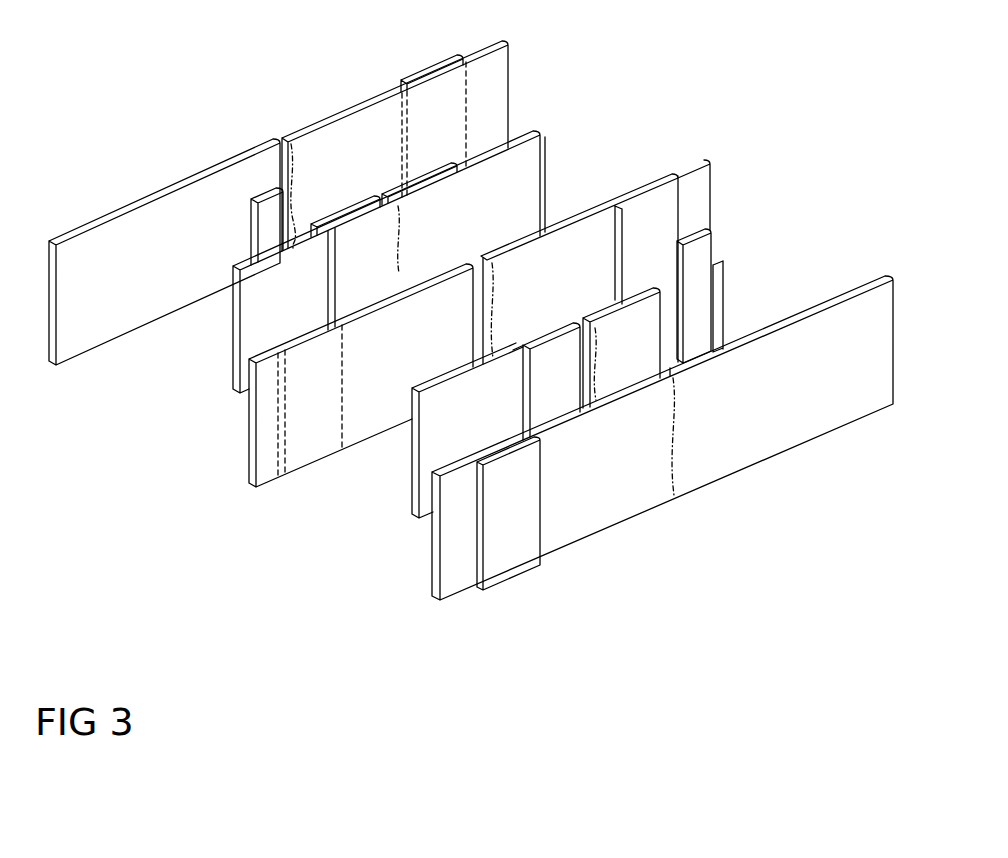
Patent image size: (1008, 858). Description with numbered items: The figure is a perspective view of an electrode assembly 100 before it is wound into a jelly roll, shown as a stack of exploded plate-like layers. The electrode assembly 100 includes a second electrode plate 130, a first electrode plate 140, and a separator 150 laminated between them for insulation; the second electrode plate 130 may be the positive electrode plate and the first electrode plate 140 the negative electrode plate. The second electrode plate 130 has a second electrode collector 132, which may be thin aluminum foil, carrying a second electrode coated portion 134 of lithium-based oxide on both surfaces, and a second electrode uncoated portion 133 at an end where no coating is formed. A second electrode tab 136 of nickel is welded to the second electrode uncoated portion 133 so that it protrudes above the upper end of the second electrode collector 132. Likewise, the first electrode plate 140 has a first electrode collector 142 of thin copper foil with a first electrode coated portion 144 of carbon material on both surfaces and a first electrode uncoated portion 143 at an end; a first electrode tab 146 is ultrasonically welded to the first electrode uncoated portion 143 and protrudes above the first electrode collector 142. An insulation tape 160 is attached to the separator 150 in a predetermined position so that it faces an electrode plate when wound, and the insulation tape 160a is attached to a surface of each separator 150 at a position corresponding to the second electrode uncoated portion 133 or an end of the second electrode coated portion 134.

The electrode assembly 100 is at (148, 106).
The second electrode plate 130 is at (352, 190).
The second electrode collector 132 is at (540, 133).
The second electrode uncoated portion 133 is at (546, 185).
The second electrode coated portion 134 is at (430, 168).
The second electrode tab 136 is at (258, 198).
The first electrode plate 140 is at (740, 300).
The first electrode collector 142 is at (724, 262).
The first electrode uncoated portion 143 is at (468, 393).
The first electrode coated portion 144 is at (644, 291).
The first electrode tab 146 is at (712, 228).
The separator 150 is at (505, 44).
The insulation tape 160 is at (664, 178).
The insulation tape 160a is at (303, 331).